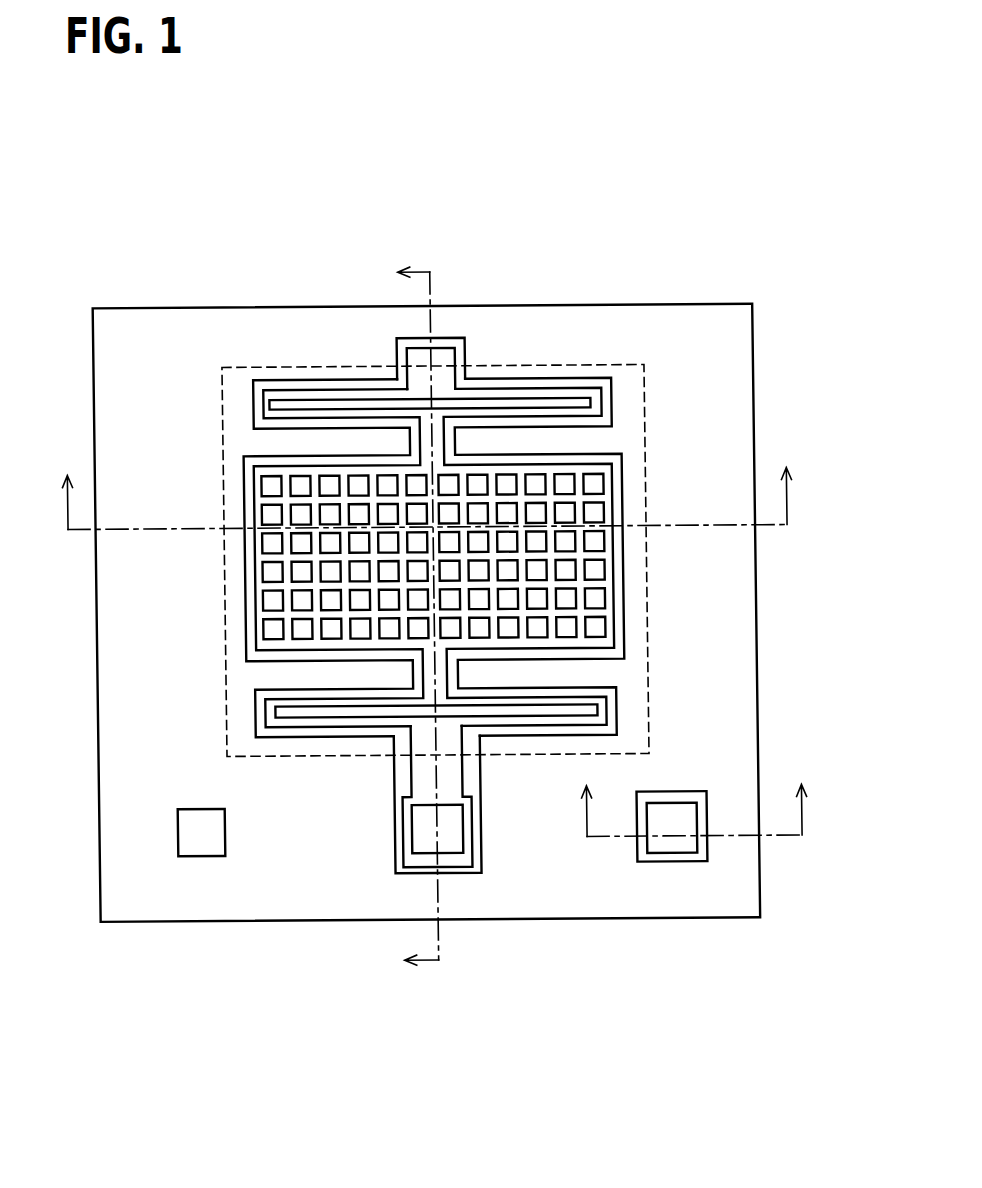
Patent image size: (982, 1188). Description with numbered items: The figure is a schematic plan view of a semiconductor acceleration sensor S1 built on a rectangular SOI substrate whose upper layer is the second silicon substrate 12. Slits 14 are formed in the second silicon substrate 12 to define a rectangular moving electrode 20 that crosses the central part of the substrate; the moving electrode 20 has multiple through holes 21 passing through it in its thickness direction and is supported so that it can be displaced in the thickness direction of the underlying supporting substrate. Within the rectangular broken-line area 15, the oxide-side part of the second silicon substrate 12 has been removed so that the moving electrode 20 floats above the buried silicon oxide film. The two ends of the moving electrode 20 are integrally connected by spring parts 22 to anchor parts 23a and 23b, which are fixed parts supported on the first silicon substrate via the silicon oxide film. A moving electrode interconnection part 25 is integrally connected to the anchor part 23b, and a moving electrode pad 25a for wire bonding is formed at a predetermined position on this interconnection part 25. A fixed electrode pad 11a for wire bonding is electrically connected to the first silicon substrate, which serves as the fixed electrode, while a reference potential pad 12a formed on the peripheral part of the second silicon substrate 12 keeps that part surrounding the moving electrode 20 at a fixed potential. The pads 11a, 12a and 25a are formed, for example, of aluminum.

The acceleration sensor S1 is at (741, 293).
The second silicon substrate 12 is at (742, 336).
The reference potential pad 12a is at (185, 837).
The fixed electrode pad 11a is at (680, 817).
The slits 14 is at (324, 383).
The area 15 is at (647, 414).
The moving electrode 20 is at (588, 555).
The through holes 21 is at (595, 604).
The spring parts 22 is at (582, 383).
The anchor part 23a is at (444, 357).
The anchor part 23b is at (446, 778).
The moving electrode interconnection part 25 is at (413, 860).
The moving electrode pad 25a is at (420, 826).